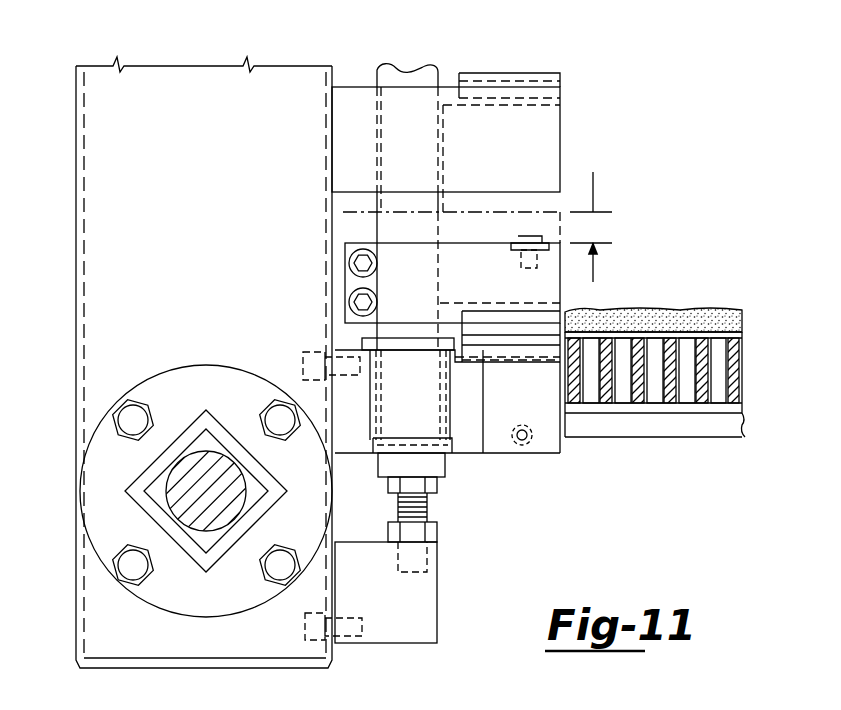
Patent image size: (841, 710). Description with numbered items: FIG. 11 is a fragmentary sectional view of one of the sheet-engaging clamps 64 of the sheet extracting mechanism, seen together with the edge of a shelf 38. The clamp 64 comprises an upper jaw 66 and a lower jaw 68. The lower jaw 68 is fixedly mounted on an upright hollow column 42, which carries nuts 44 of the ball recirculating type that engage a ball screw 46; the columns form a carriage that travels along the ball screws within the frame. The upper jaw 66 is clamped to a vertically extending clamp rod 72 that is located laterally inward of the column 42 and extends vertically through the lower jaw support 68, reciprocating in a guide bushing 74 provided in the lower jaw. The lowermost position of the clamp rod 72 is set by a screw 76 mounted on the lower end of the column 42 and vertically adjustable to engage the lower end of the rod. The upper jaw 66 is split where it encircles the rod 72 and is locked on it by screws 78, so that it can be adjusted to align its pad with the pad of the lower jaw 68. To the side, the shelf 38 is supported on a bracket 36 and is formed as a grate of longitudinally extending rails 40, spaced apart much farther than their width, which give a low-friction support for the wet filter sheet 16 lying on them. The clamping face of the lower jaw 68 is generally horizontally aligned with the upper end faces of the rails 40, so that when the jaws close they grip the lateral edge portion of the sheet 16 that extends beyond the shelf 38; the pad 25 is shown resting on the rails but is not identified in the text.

The filter media sheet 16 is at (745, 331).
The abrasive pad 25 is at (700, 322).
The support bracket 36 is at (700, 432).
The shelf 38 is at (659, 403).
The rail 40 is at (738, 376).
The upright hollow column 42 is at (100, 325).
The nut 44 is at (236, 342).
The ball screw 46 is at (213, 520).
The clamp 64 is at (337, 326).
The upper jaw 66 is at (553, 290).
The lower jaw 68 is at (543, 445).
The clamp rod 72 is at (418, 69).
The guide bushing 74 is at (400, 345).
The screw 76 is at (415, 512).
The screw 78 is at (352, 296).